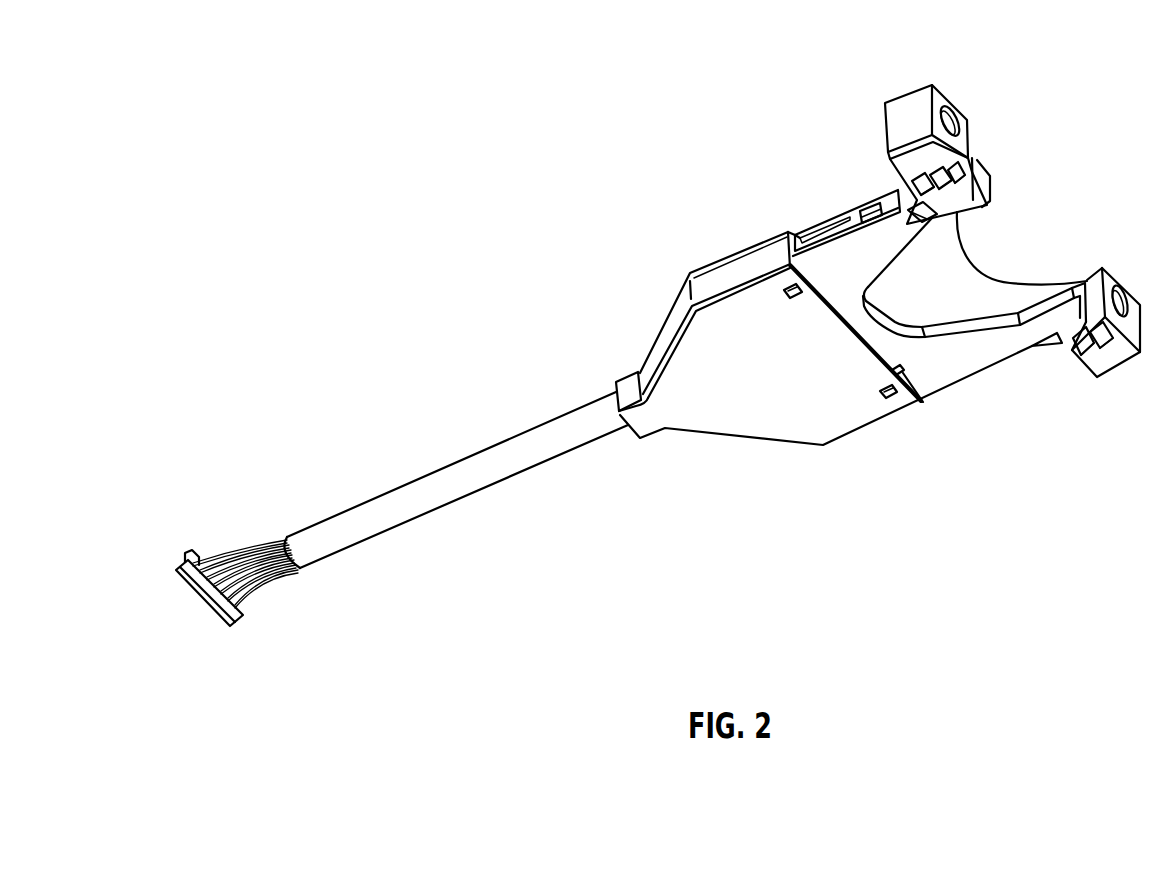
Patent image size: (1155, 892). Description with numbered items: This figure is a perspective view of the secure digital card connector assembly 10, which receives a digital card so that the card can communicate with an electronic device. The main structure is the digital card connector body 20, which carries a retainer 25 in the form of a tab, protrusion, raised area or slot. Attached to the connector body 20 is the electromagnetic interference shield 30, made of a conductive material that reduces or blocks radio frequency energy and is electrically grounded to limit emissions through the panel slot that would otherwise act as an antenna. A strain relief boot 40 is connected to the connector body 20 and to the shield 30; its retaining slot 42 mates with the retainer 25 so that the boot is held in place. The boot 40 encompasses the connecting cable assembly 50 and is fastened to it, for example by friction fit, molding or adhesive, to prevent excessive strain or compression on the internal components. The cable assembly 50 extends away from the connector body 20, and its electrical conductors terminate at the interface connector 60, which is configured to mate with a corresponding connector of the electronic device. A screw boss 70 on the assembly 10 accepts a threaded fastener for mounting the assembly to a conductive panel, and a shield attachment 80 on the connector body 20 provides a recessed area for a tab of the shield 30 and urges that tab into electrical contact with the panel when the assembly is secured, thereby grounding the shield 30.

The secure digital card connector assembly 10 is at (556, 270).
The digital card connector body 20 is at (960, 362).
The retainer 25 is at (925, 393).
The electromagnetic interference (EMI) shield 30 is at (958, 267).
The strain relief boot 40 is at (816, 375).
The retaining slot 42 is at (888, 397).
The connecting cable assembly 50 is at (500, 468).
The interface connector 60 is at (237, 618).
The screw boss 70 is at (945, 105).
The shield attachment 80 is at (1087, 323).